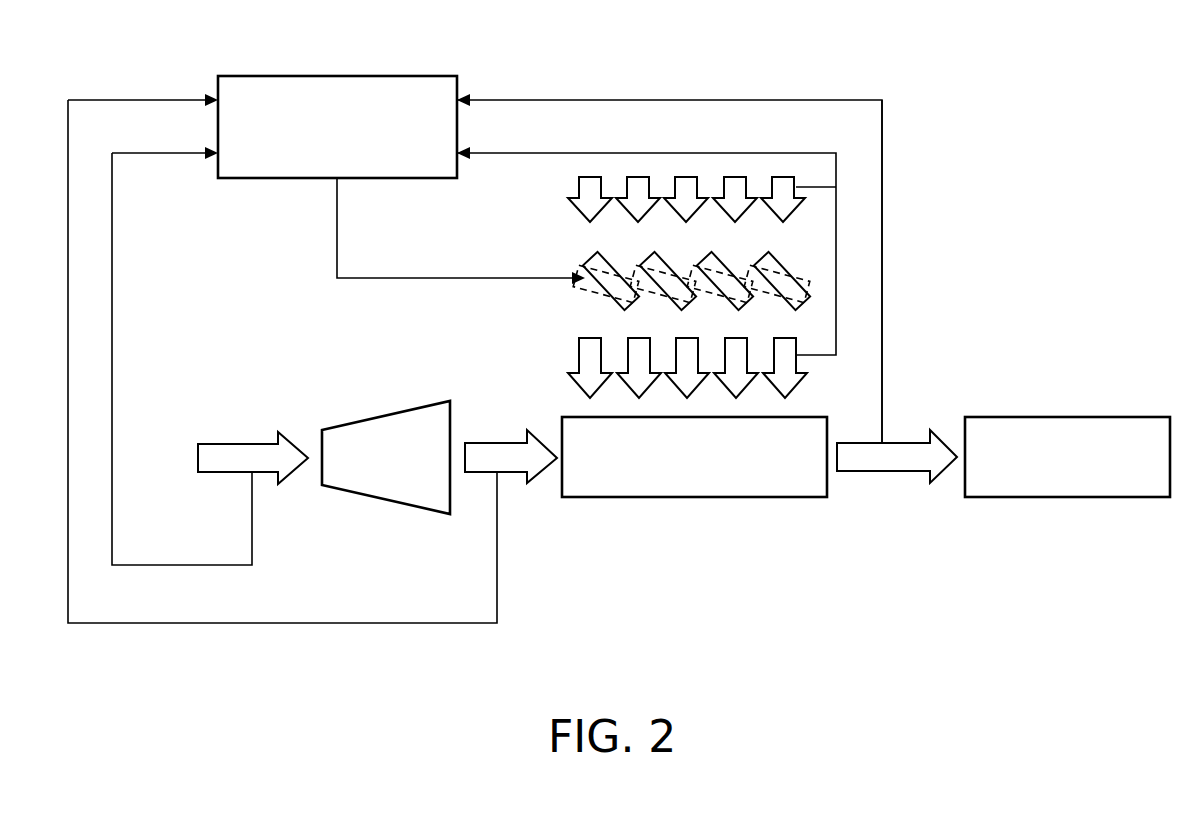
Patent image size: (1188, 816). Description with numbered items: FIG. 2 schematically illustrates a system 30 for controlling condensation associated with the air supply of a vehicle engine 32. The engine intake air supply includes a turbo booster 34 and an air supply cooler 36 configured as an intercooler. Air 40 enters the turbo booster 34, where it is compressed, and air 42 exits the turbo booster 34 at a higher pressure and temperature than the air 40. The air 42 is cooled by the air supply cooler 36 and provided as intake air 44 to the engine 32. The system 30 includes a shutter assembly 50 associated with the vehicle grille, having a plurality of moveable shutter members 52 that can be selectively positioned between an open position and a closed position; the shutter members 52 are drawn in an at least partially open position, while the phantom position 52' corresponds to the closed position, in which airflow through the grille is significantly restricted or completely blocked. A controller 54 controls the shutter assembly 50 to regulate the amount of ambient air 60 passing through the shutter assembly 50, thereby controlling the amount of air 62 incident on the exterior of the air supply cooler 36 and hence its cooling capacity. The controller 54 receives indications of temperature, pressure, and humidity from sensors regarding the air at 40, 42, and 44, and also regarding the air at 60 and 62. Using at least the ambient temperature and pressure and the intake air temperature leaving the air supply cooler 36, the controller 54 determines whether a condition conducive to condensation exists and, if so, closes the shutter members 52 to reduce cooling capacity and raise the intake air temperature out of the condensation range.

The system 30 is at (978, 146).
The vehicle engine 32 is at (1073, 487).
The turbo booster 34 is at (373, 432).
The air supply cooler 36 is at (697, 486).
The air entering the turbo booster 40 is at (225, 453).
The air exiting the turbo booster 42 is at (505, 462).
The intake air exiting the air supply cooler 44 is at (880, 462).
The shutter assembly 50 is at (705, 271).
The shutter members 52 is at (650, 257).
The closed position of shutter members 52' is at (705, 314).
The controller 54 is at (317, 97).
The ambient air 60 is at (588, 182).
The air incident on the air supply cooler 62 is at (588, 354).